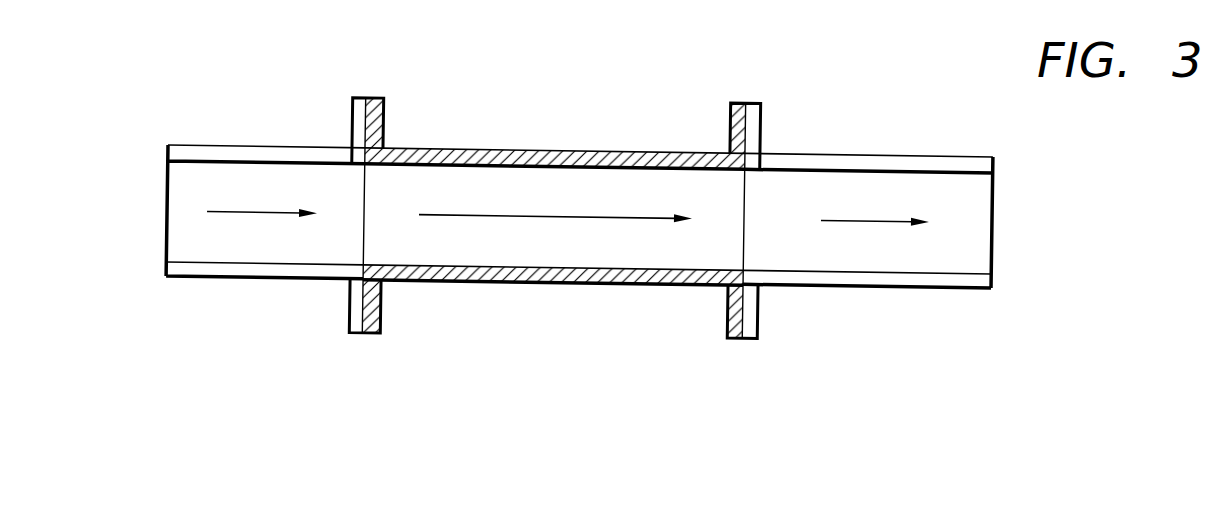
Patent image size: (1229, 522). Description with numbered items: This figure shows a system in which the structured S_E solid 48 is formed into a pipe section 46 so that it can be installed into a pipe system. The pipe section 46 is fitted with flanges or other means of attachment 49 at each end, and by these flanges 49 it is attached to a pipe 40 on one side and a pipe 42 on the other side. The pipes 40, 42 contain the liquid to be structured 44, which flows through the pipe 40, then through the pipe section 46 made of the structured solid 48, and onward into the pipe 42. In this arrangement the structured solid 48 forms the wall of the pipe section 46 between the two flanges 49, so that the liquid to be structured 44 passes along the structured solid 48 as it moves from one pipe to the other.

The pipe 40 is at (253, 147).
The pipe 42 is at (860, 163).
The liquid to be structured 44 is at (245, 243).
The pipe section 46 is at (573, 140).
The structured solid 48 is at (740, 340).
The flanges 49 is at (385, 124).